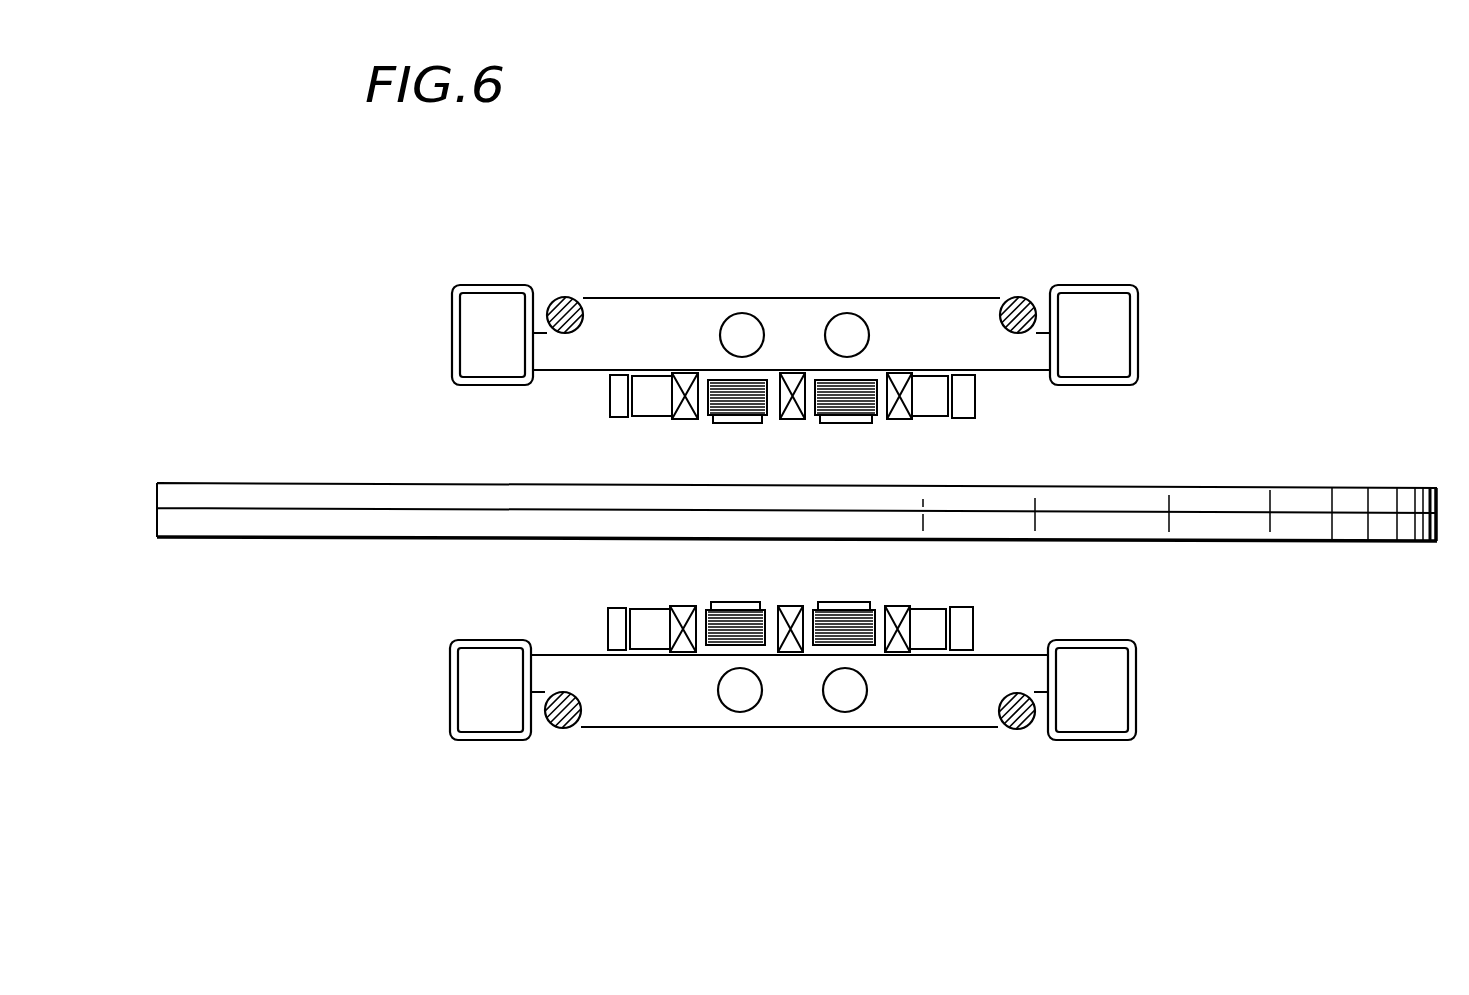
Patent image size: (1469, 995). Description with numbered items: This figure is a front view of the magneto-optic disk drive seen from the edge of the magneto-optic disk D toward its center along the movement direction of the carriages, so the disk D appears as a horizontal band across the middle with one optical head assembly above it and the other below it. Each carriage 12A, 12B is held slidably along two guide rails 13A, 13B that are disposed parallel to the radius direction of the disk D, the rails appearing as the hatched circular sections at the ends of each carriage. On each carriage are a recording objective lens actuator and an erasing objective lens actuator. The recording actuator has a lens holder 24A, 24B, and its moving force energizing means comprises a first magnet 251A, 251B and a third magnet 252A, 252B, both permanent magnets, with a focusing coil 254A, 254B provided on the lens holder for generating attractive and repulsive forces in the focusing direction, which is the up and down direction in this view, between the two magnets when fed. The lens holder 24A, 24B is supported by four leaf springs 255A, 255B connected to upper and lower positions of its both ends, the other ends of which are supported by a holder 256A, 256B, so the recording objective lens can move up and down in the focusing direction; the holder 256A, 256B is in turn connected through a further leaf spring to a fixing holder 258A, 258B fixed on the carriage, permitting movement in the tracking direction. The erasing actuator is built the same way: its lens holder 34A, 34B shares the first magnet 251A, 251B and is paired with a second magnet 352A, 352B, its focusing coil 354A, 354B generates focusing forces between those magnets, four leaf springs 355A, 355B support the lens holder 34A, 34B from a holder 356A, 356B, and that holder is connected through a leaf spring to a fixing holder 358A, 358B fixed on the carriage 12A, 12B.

The carriage 12A is at (987, 713).
The carriage 12B is at (594, 298).
The guide rail 13A is at (1030, 712).
The guide rail 13B is at (558, 313).
The lens holder 24A is at (717, 602).
The lens holder 24B is at (872, 423).
The lens holder 34A is at (818, 602).
The lens holder 34B is at (737, 423).
The first magnet 251A is at (787, 653).
The first magnet 251B is at (793, 373).
The third magnet 252A is at (683, 650).
The third magnet 252B is at (903, 373).
The focusing coil 254A is at (718, 645).
The focusing coil 254B is at (845, 385).
The leaf spring 255A is at (647, 607).
The leaf spring 255B is at (935, 418).
The holder 256A is at (607, 628).
The holder 256B is at (975, 397).
The fixing holder 258A is at (650, 633).
The fixing holder 258B is at (933, 397).
The second magnet 352A is at (897, 648).
The second magnet 352B is at (685, 380).
The focusing coil 354A is at (825, 645).
The focusing coil 354B is at (730, 385).
The leaf spring 355A is at (947, 608).
The leaf spring 355B is at (652, 418).
The holder 356A is at (973, 623).
The holder 356B is at (610, 395).
The fixing holder 358A is at (935, 632).
The fixing holder 358B is at (652, 395).
The magneto-optic disk D is at (789, 450).